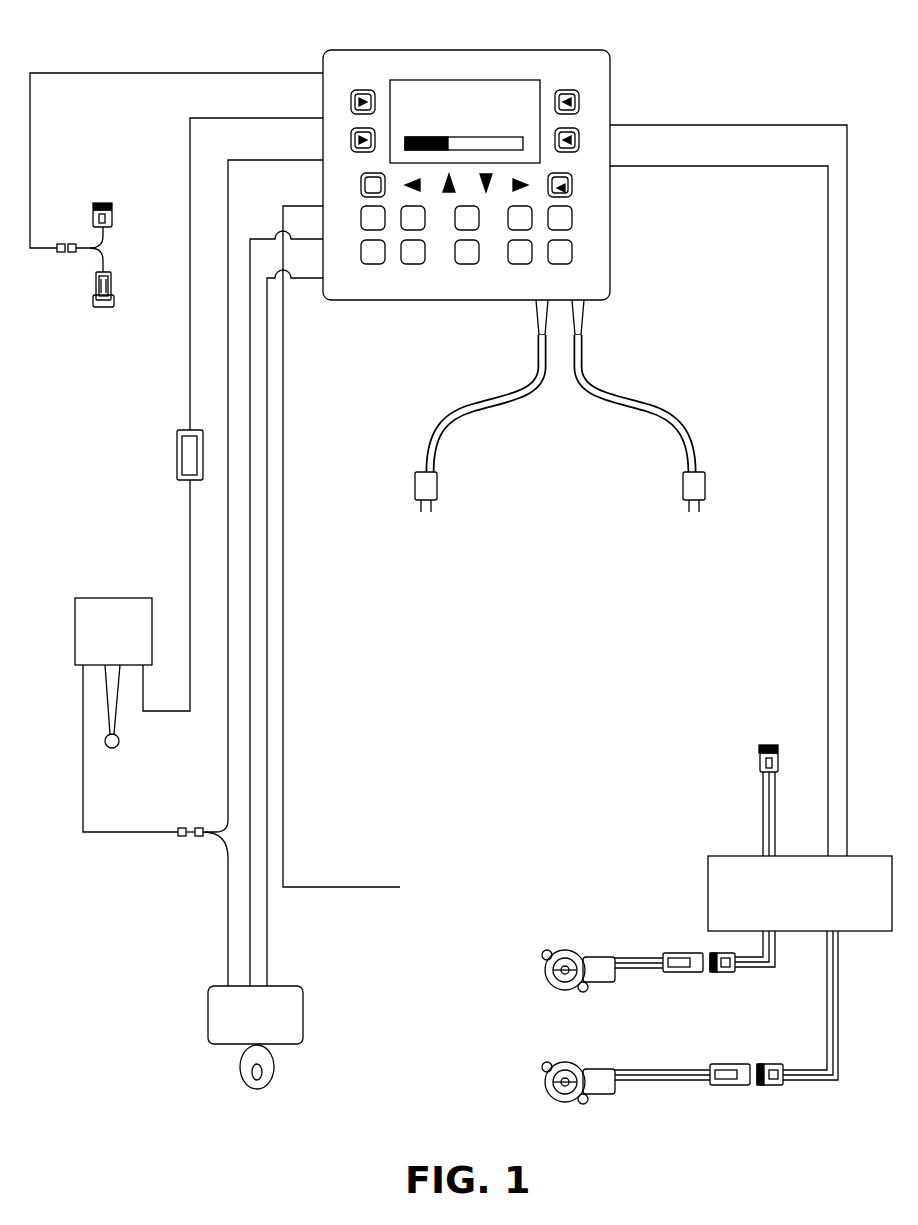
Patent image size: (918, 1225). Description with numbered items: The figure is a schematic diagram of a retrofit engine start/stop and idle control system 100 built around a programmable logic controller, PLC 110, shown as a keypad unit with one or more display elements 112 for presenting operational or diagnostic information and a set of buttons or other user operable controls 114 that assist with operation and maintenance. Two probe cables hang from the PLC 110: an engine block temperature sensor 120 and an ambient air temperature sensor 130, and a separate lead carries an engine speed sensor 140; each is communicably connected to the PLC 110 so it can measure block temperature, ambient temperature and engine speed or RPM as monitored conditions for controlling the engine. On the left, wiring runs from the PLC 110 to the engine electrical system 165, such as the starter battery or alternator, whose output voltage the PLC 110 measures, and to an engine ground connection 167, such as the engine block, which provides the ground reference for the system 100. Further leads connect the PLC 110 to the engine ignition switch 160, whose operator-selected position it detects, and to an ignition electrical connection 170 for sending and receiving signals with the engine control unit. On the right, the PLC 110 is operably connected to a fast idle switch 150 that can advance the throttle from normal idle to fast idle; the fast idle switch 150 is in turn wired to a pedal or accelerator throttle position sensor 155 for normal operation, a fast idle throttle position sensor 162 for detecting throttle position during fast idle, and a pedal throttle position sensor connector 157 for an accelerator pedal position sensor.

The retrofit engine start/stop and idle control system 100 is at (553, 663).
The PLC 110 is at (478, 185).
The display element 112 is at (405, 87).
The user operable controls 114 is at (375, 270).
The engine block temperature sensor 120 is at (437, 500).
The ambient air temperature sensor 130 is at (705, 500).
The engine speed sensor 140 is at (105, 307).
The fast idle switch 150 is at (825, 908).
The pedal or accelerator throttle position sensor 155 is at (567, 950).
The pedal throttle position sensor connector 157 is at (770, 743).
The engine ignition switch 160 is at (303, 1044).
The fast idle throttle position sensor 162 is at (567, 1062).
The engine electrical system 165 is at (113, 597).
The engine ground connection 167 is at (117, 746).
The ignition electrical connection 170 is at (353, 886).